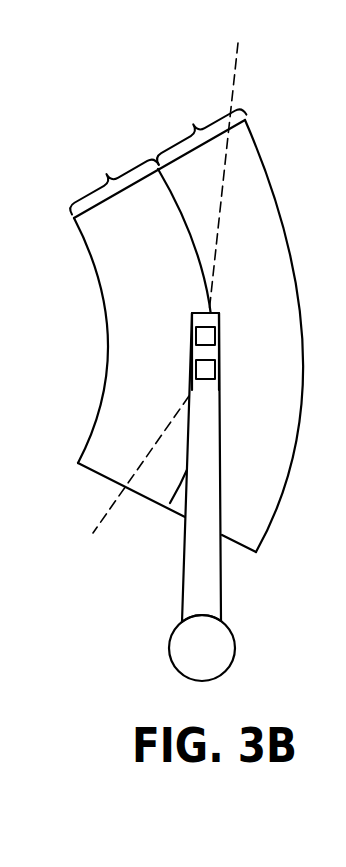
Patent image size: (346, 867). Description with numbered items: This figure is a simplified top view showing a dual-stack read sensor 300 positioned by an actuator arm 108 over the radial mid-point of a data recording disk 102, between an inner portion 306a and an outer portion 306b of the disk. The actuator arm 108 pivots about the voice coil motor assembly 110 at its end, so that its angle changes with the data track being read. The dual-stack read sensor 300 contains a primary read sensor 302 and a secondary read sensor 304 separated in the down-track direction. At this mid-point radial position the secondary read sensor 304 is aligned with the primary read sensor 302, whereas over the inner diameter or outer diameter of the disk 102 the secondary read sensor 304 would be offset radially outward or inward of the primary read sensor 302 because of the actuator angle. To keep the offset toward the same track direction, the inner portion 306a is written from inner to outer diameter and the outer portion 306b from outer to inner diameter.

The data recording disk 102 is at (213, 188).
The actuator arm 108 is at (184, 562).
The voice coil motor assembly 110 is at (228, 666).
The dual-stack read sensor 300 is at (191, 322).
The primary read sensor 302 is at (215, 337).
The secondary read sensor 304 is at (215, 372).
The inner portion 306a is at (111, 182).
The outer portion 306b is at (198, 132).